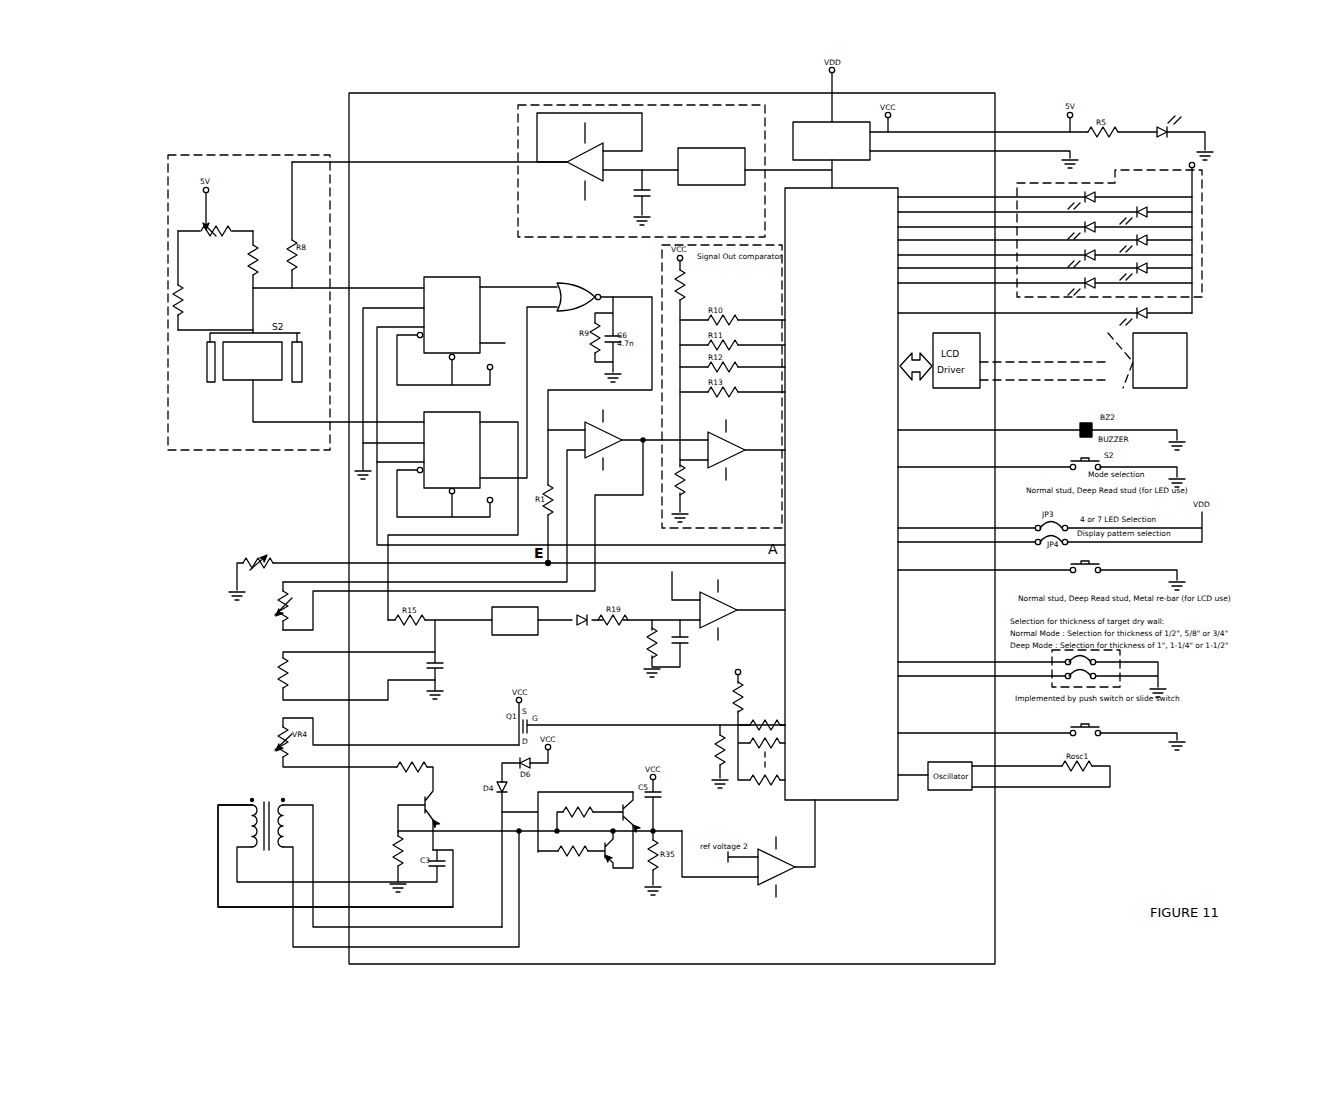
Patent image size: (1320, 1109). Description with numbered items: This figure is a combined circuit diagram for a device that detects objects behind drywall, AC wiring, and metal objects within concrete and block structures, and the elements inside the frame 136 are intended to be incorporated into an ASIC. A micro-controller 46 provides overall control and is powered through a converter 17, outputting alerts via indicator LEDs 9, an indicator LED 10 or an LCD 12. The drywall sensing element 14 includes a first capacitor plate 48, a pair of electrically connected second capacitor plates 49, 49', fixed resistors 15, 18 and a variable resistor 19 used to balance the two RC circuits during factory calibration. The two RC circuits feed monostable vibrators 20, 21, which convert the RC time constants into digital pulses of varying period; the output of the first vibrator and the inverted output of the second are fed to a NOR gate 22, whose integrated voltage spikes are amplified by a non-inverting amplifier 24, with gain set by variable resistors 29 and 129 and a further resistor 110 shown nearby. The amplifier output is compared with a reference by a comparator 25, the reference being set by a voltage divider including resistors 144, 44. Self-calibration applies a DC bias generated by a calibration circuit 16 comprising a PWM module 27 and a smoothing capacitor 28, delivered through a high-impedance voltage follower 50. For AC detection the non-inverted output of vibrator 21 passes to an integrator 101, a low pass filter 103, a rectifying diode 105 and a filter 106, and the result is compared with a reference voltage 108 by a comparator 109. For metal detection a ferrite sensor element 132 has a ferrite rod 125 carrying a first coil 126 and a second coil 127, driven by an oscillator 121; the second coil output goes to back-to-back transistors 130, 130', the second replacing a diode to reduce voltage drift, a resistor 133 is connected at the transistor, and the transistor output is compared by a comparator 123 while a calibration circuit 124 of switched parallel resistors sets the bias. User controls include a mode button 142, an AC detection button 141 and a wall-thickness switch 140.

The indicator LEDs 9 is at (1205, 193).
The stud edge indicator LED 10 is at (1168, 122).
The LCD 12 is at (1187, 360).
The sensing element 14 is at (168, 270).
The fixed resistor 15 is at (252, 260).
The calibration circuit 16 is at (517, 235).
The converter 17 is at (858, 148).
The fixed resistor 18 is at (185, 297).
The variable resistor 19 is at (217, 230).
The first monostable vibrator 20 is at (451, 320).
The second monostable vibrator 21 is at (448, 453).
The NOR gate 22 is at (600, 258).
The non-inverting amplifier 24 is at (588, 432).
The comparator 25 is at (723, 453).
The PWM module 27 is at (740, 120).
The capacitor 28 is at (652, 200).
The variable resistor 29 is at (273, 612).
The resistor 44 is at (690, 288).
The micro-controller 46 is at (841, 494).
The first capacitor plate 48 is at (240, 385).
The second capacitor plate 49 is at (167, 365).
The second capacitor plate 49' is at (285, 422).
The voltage follower 50 is at (575, 158).
The integrator 101 is at (440, 665).
The low pass filter 103 is at (528, 637).
The diode 105 is at (592, 612).
The filter 106 is at (665, 675).
The reference voltage 108 is at (686, 576).
The comparator 109 is at (720, 612).
The resistor R for 220V 110 is at (280, 680).
The oscillator 121 is at (452, 755).
The comparator 123 is at (790, 870).
The calibration circuit 124 is at (754, 718).
The ferrite rod 125 is at (263, 800).
The first coil 126 is at (250, 820).
The second coil 127 is at (290, 832).
The variable resistor 129 is at (262, 558).
The transistor 130 is at (620, 822).
The second transistor 130' is at (585, 885).
The ferrite sensor element 132 is at (193, 800).
The resistor R3 133 is at (392, 853).
The frame 136 is at (995, 838).
The switch 140 is at (1100, 670).
The button 141 is at (1150, 726).
The mode button 142 is at (1108, 566).
The resistor 144 is at (676, 492).